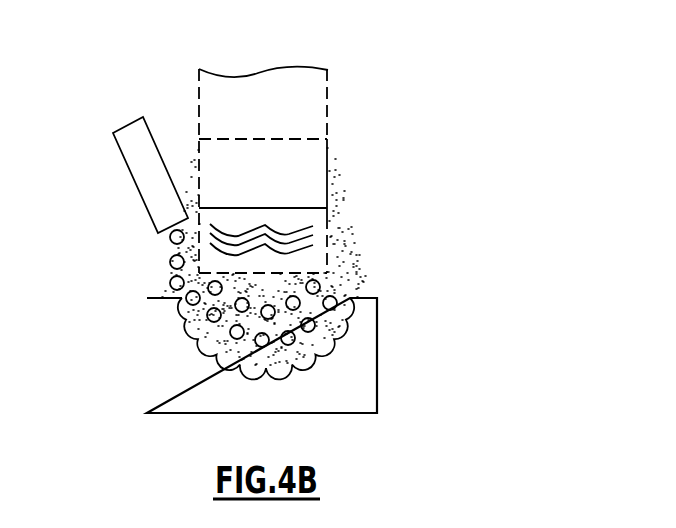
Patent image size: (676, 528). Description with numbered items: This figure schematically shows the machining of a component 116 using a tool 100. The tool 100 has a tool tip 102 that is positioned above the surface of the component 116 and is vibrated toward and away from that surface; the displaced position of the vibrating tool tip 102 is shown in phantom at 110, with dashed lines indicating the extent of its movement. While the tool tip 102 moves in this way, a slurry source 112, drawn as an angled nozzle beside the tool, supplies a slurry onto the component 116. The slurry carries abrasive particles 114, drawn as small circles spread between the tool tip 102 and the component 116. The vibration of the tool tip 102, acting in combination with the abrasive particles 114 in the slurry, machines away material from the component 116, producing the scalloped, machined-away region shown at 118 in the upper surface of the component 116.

The tool 100 is at (350, 84).
The tool tip 102 is at (305, 173).
The phantom position of tool tip 110 is at (335, 267).
The slurry source 112 is at (133, 140).
The abrasive particles 114 is at (185, 303).
The component 116 is at (368, 375).
The machined-away region 118 is at (306, 350).